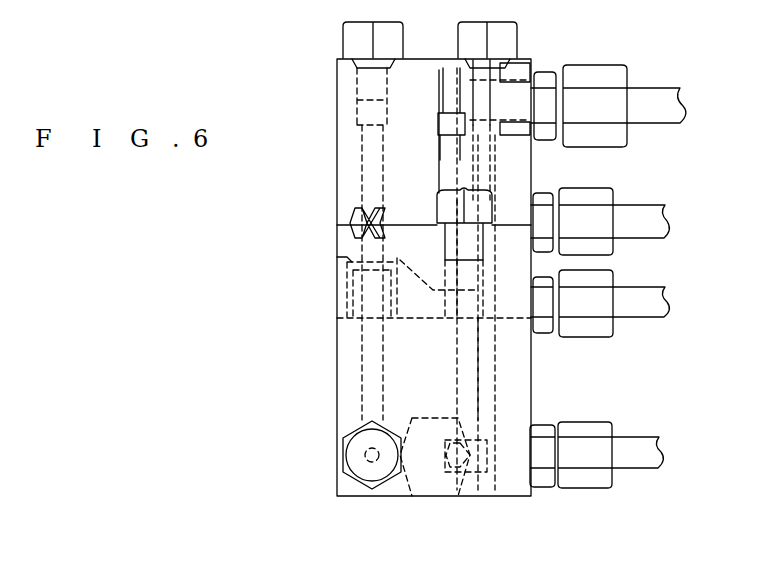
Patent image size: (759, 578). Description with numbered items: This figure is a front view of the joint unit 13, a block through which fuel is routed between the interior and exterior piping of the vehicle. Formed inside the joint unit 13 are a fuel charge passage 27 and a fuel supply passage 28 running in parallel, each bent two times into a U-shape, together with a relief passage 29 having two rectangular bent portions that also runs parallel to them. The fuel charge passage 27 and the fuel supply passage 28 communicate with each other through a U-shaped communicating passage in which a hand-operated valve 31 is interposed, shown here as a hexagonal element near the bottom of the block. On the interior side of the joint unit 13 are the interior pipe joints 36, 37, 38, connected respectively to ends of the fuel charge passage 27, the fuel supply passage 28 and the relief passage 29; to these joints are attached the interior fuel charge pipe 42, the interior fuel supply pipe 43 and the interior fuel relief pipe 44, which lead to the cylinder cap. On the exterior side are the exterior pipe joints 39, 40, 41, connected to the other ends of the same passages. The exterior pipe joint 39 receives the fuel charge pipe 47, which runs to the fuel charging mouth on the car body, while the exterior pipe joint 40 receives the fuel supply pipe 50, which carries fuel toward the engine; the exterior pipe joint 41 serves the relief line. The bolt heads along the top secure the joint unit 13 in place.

The joint unit 13 is at (290, 82).
The fuel charge passage 27 is at (488, 388).
The fuel supply passage 28 is at (470, 358).
The relief passage 29 is at (405, 217).
The hand-operated valve 31 is at (427, 477).
The interior pipe joint 36 is at (600, 77).
The interior pipe joint 37 is at (583, 327).
The interior pipe joint 38 is at (600, 197).
The exterior pipe joint 39 is at (605, 483).
The exterior pipe joint 40 is at (588, 482).
The exterior pipe joint 41 is at (357, 467).
The interior fuel charge pipe 42 is at (655, 102).
The interior fuel supply pipe 43 is at (653, 288).
The interior fuel relief pipe 44 is at (653, 217).
The fuel charge pipe 47 is at (670, 431).
The fuel supply pipe 50 is at (640, 448).